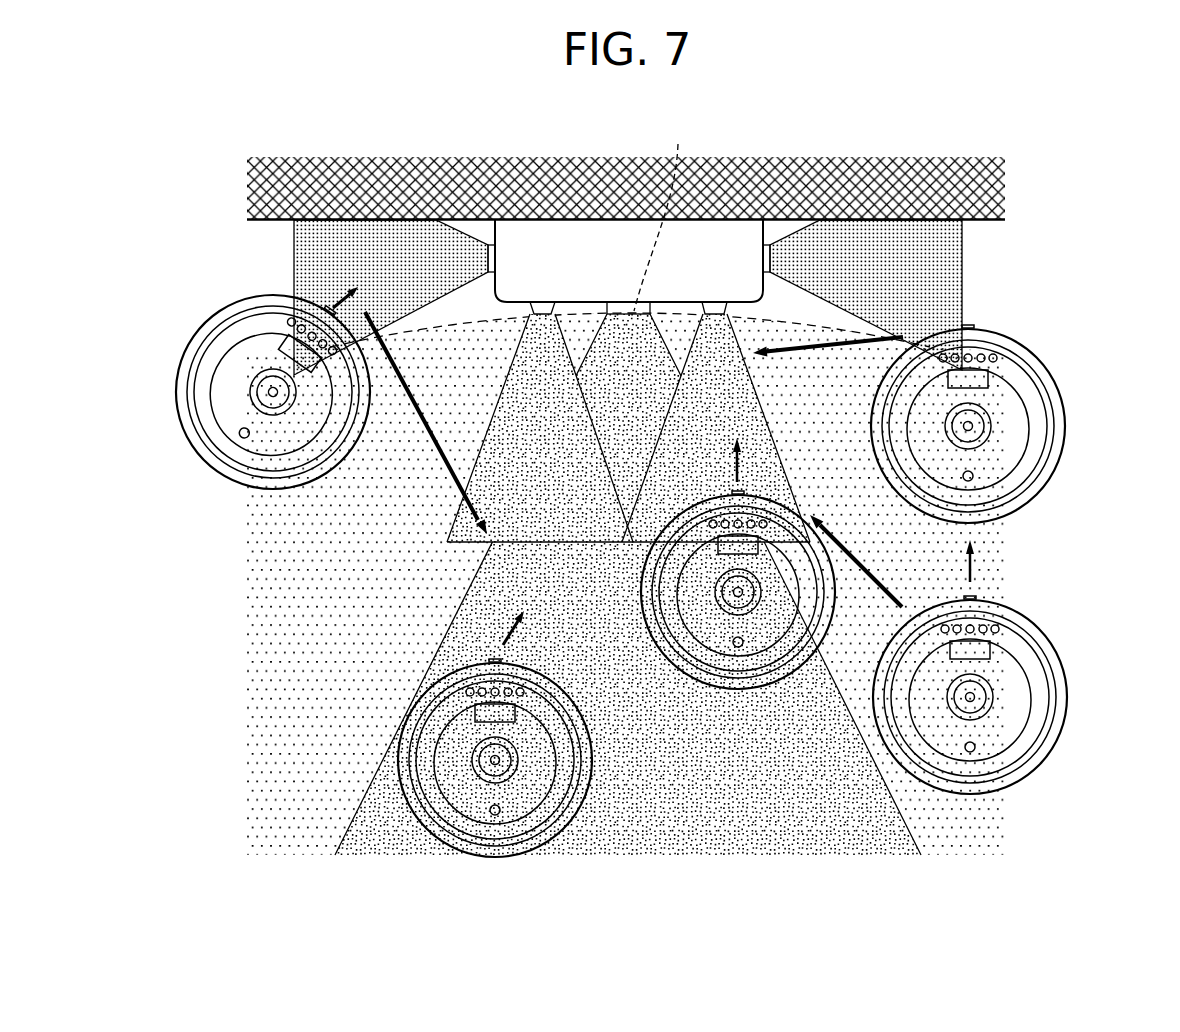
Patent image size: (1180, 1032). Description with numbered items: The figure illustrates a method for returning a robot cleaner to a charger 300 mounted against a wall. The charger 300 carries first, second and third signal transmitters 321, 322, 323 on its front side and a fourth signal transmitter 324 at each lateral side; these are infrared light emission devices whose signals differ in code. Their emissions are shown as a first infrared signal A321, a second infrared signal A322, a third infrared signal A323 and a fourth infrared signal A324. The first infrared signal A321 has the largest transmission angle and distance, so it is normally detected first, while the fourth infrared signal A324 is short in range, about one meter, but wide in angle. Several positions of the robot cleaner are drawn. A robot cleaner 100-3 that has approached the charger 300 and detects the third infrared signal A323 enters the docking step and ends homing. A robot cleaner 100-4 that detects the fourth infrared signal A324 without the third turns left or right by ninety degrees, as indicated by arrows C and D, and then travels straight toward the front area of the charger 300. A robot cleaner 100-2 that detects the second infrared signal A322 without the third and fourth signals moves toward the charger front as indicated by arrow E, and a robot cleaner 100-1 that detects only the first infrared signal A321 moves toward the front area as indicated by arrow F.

The charger 300 is at (640, 232).
The first signal transmitter 321 is at (612, 308).
The second signal transmitter 322 is at (669, 216).
The third signal transmitter 323 is at (540, 306).
The fourth signal transmitter 324 is at (489, 244).
The first infrared signal A321 is at (625, 584).
The second infrared signal A322 is at (630, 584).
The third infrared signal A323 is at (628, 428).
The fourth infrared signal A324 is at (628, 297).
The robot cleaner 100-1 is at (1066, 640).
The robot cleaner 100-2 is at (430, 840).
The robot cleaner 100-3 is at (735, 688).
The robot cleaner 100-4 is at (177, 380).
The arrow C is at (828, 358).
The arrow D is at (426, 423).
The arrow E is at (521, 631).
The arrow F is at (856, 561).